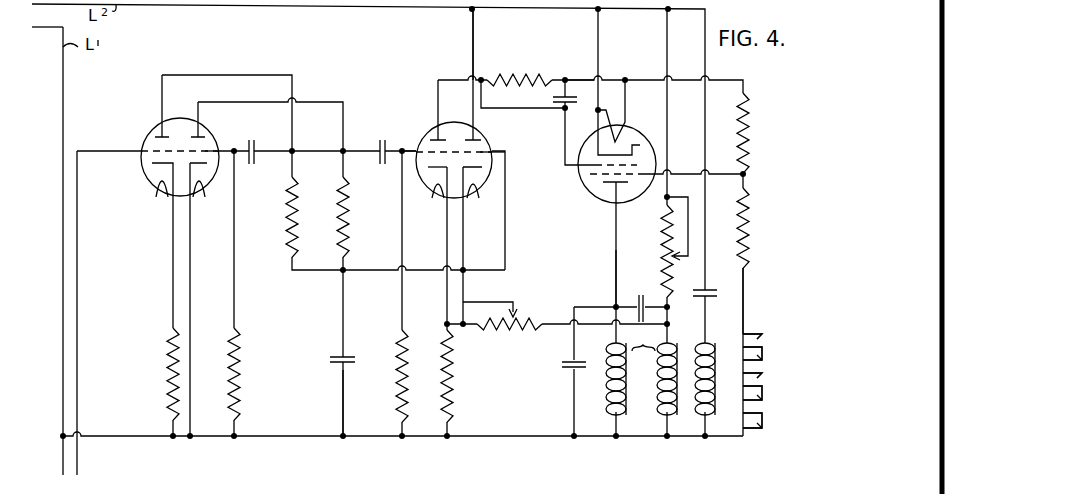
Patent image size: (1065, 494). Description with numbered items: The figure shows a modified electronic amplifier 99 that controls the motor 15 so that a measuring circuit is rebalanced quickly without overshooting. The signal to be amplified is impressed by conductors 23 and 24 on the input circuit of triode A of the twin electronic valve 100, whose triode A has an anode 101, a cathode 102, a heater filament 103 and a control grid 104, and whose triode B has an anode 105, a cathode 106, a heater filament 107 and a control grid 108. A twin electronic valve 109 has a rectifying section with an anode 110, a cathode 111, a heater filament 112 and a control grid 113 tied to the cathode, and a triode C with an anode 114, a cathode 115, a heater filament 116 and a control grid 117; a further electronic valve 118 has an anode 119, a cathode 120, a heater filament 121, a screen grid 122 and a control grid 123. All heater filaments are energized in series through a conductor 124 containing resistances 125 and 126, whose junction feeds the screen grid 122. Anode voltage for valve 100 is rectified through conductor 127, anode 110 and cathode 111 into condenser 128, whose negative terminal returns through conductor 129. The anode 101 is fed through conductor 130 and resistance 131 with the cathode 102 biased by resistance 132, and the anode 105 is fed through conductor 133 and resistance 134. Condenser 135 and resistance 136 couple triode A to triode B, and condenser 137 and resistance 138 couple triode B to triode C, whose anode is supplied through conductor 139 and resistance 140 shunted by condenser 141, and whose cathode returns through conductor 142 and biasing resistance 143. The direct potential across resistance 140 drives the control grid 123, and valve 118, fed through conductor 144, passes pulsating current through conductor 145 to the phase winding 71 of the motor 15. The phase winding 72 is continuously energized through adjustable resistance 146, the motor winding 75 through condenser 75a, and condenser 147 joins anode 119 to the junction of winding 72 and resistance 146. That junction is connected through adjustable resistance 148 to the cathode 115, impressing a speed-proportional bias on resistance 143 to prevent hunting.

The motor 15 is at (643, 337).
The conductor 23 is at (78, 340).
The conductor 24 is at (62, 340).
The phase winding 71 is at (610, 414).
The phase winding 72 is at (662, 414).
The motor winding 75 is at (703, 414).
The condenser 75a is at (726, 291).
The electronic amplifier 99 is at (272, 41).
The electronic valve 100 is at (146, 172).
The anode 101 is at (158, 136).
The cathode 102 is at (151, 163).
The heater filament 103 is at (160, 197).
The control grid 104 is at (153, 150).
The anode 105 is at (205, 136).
The cathode 106 is at (204, 172).
The heater filament 107 is at (200, 197).
The control grid 108 is at (207, 152).
The electronic valve 109 is at (414, 140).
The anode 110 is at (480, 139).
The cathode 111 is at (478, 182).
The heater filament 112 is at (478, 200).
The control grid 113 is at (482, 157).
The anode 114 is at (435, 138).
The cathode 115 is at (428, 178).
The heater filament 116 is at (440, 200).
The control grid 117 is at (408, 158).
The electronic valve 118 is at (598, 185).
The anode 119 is at (612, 186).
The cathode 120 is at (640, 146).
The heater filament 121 is at (622, 138).
The screen grid 122 is at (592, 176).
The control grid 123 is at (592, 167).
The conductor 124 is at (744, 285).
The resistance 125 is at (745, 222).
The resistance 126 is at (745, 138).
The conductor 127 is at (473, 30).
The condenser 128 is at (330, 358).
The conductor 129 is at (342, 408).
The conductor 130 is at (260, 76).
The resistance 131 is at (288, 224).
The biasing resistance 132 is at (168, 382).
The conductor 133 is at (273, 104).
The resistance 134 is at (342, 224).
The condenser 135 is at (253, 166).
The resistance 136 is at (238, 380).
The condenser 137 is at (383, 166).
The resistance 138 is at (398, 383).
The conductor 139 is at (592, 76).
The resistance 140 is at (494, 78).
The condenser 141 is at (555, 100).
The conductor 142 is at (447, 295).
The biasing resistance 143 is at (450, 383).
The conductor 144 is at (599, 30).
The conductor 145 is at (616, 270).
The resistance 146 is at (664, 226).
The condenser 147 is at (642, 297).
The adjustable resistance 148 is at (535, 327).